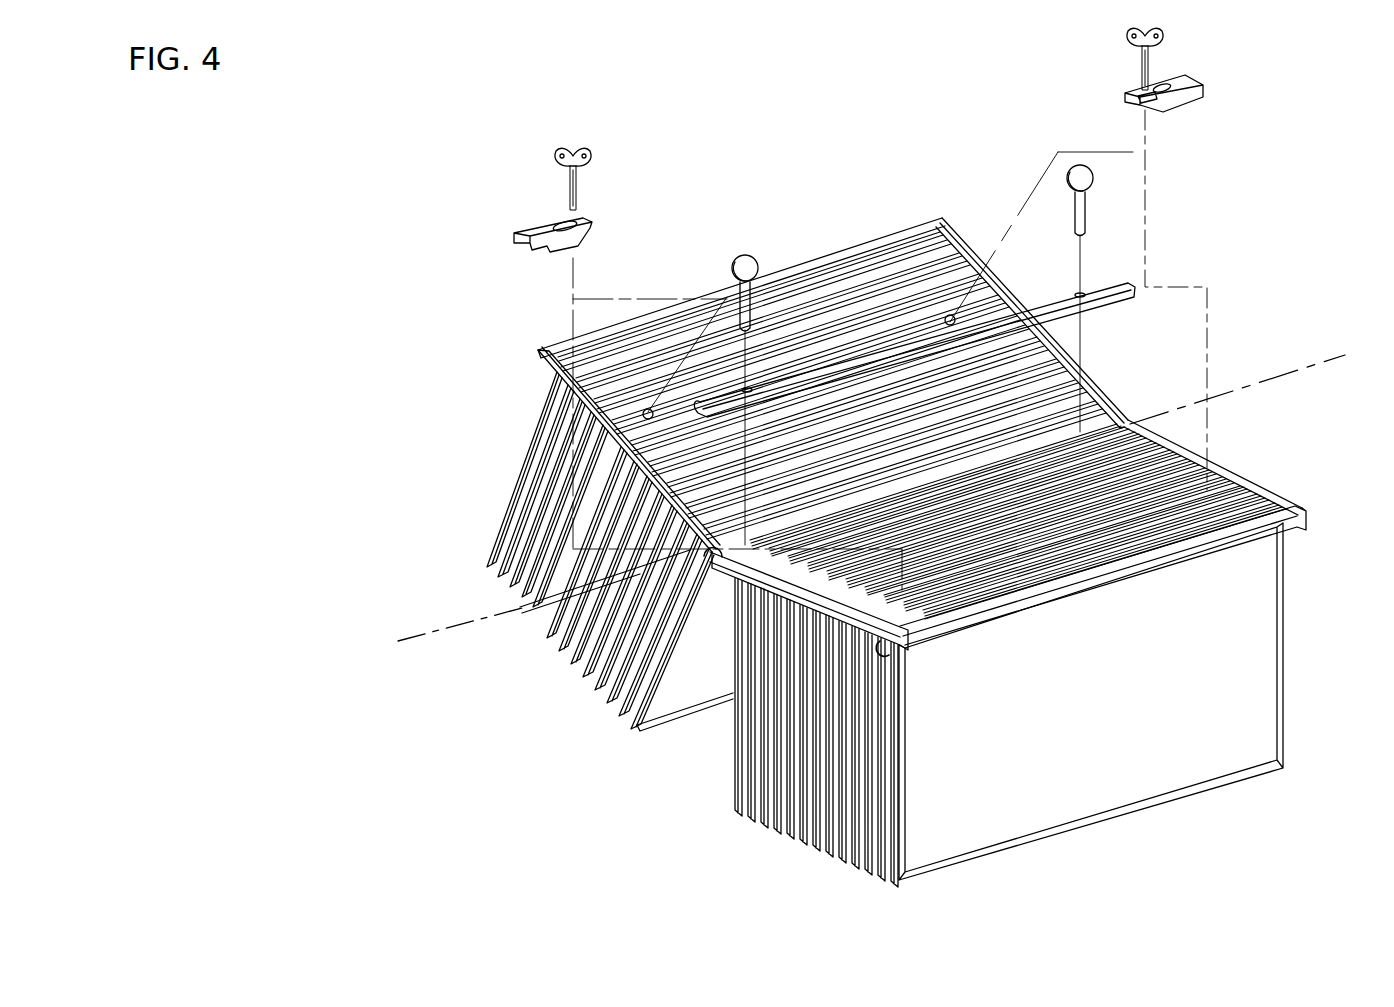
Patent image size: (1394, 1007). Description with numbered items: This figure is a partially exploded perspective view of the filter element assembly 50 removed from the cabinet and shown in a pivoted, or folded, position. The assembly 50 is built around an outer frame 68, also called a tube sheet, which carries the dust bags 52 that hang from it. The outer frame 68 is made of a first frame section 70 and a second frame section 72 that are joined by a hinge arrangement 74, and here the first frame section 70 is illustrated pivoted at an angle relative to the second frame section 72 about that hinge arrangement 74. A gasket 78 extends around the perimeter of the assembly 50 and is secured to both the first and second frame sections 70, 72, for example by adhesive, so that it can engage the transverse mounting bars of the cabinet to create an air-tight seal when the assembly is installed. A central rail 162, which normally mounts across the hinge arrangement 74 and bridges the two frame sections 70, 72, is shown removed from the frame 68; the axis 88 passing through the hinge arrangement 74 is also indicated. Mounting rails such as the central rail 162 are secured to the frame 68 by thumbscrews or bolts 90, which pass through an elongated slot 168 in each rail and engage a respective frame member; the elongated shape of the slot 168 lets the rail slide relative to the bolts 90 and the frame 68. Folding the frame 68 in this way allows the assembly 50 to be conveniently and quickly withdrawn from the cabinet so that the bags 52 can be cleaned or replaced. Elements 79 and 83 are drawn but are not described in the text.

The filter element assembly 50 is at (783, 168).
The dust bags 52 is at (910, 646).
The outer frame 68 is at (993, 228).
The first frame section 70 is at (555, 388).
The second frame section 72 is at (908, 656).
The hinge arrangement 74 is at (1123, 390).
The gasket 78 is at (798, 272).
The front frame rail 79 is at (752, 592).
The divider 83 is at (606, 453).
The axis 88 is at (430, 636).
The bolts 90 is at (570, 150).
The central rail 162 is at (1092, 282).
The elongated slot 168 is at (557, 225).